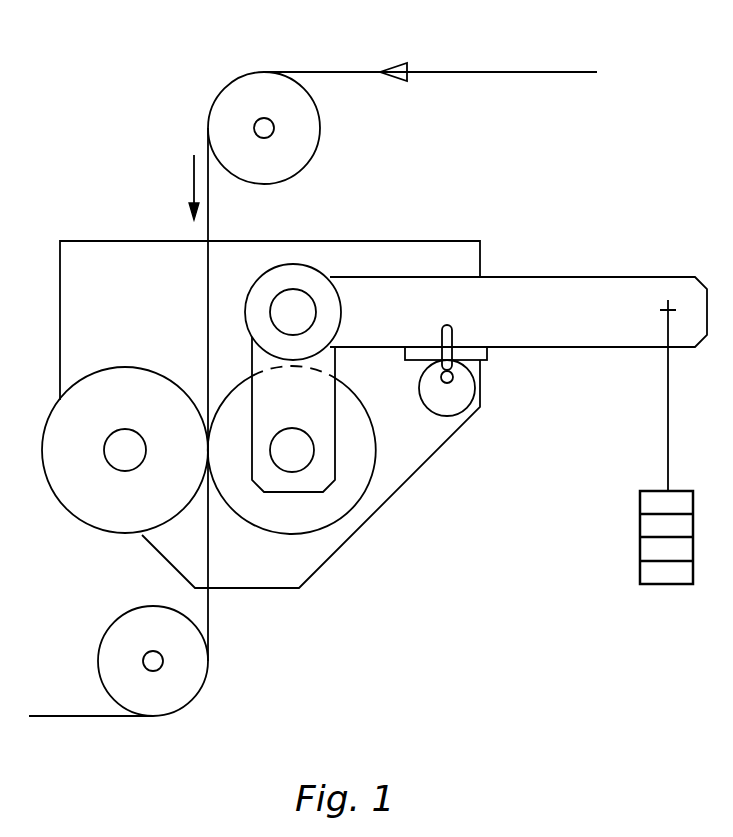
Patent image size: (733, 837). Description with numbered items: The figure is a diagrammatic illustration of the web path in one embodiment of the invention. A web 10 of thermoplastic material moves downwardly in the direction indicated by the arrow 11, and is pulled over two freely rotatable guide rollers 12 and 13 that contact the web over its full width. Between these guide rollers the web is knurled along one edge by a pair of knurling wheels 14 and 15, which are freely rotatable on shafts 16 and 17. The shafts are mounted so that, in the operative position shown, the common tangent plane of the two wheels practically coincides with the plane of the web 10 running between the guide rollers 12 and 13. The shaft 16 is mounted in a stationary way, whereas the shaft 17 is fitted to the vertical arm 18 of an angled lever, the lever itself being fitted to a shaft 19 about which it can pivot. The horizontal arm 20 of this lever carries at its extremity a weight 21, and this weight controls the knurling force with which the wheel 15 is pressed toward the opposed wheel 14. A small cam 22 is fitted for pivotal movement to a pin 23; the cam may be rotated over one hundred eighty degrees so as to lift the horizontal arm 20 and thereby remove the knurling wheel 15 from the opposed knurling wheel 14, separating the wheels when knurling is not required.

The web 10 is at (340, 68).
The arrow 11 is at (190, 182).
The guide roller 12 is at (255, 176).
The guide roller 13 is at (190, 690).
The knurling wheel 14 is at (105, 405).
The knurling wheel 15 is at (340, 512).
The shaft 16 is at (123, 463).
The shaft 17 is at (288, 463).
The vertical arm 18 is at (330, 442).
The shaft 19 is at (297, 300).
The horizontal arm 20 is at (600, 290).
The weight 21 is at (650, 525).
The cam 22 is at (455, 410).
The pin 23 is at (455, 376).